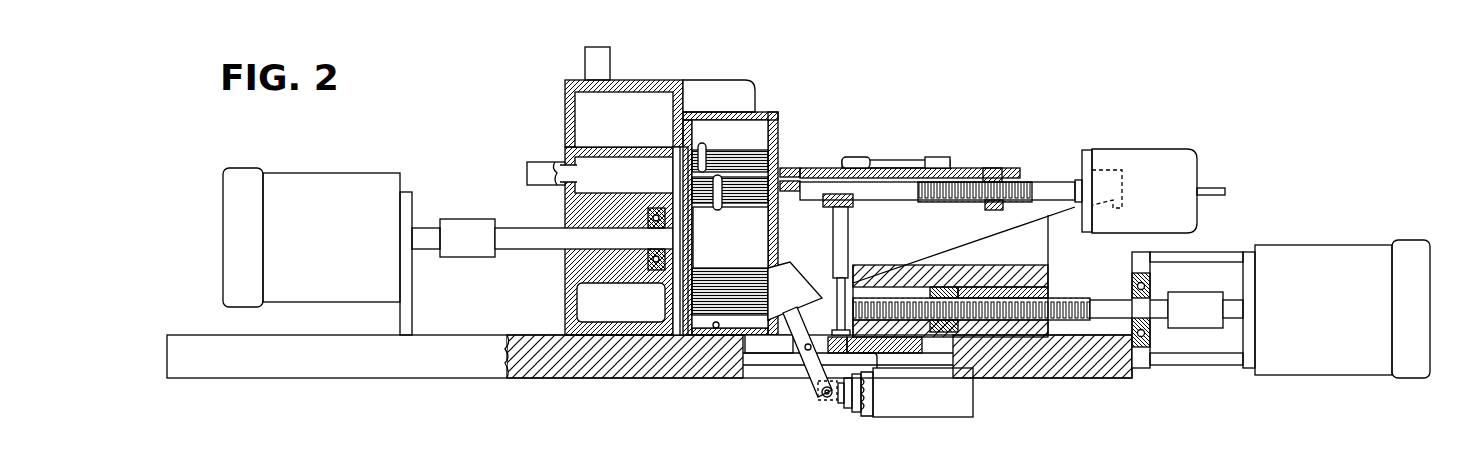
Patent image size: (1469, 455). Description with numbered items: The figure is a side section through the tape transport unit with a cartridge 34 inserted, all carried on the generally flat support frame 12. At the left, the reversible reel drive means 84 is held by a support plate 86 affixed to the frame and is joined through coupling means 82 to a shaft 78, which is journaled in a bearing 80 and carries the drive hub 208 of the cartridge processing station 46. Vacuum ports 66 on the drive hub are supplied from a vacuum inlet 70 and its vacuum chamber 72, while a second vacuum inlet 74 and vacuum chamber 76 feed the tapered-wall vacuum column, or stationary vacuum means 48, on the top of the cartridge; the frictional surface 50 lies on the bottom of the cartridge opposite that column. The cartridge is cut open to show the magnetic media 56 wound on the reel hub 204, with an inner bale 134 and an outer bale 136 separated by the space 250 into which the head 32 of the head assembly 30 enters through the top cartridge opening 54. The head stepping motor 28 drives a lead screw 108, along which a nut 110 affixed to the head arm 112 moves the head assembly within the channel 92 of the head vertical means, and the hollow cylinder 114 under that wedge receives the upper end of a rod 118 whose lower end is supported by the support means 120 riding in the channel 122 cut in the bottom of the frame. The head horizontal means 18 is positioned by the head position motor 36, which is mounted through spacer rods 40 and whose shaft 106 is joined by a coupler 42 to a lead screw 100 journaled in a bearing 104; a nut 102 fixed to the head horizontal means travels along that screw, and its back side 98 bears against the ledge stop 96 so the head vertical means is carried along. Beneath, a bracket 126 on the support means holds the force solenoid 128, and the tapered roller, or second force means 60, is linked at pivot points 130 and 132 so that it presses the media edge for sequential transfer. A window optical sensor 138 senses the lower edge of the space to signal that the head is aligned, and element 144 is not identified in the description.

The support frame 12 is at (203, 335).
The head horizontal means 18 is at (969, 281).
The head stepping motor 28 is at (1150, 176).
The head assembly 30 is at (963, 166).
The magnetic transducer (head) 32 is at (806, 172).
The cartridge 34 is at (731, 248).
The head position motor 36 is at (1304, 254).
The spacer rods 40 is at (1193, 311).
The coupler 42 is at (1190, 302).
The cartridge processing station 46 is at (626, 188).
The tapered-wall vacuum column (stationary vacuum means) 48 is at (722, 205).
The frictional surface 50 is at (717, 330).
The top cartridge opening 54 is at (779, 162).
The magnetic media 56 is at (705, 142).
The tapered roller (second force means) 60 is at (806, 306).
The vacuum ports 66 is at (673, 178).
The vacuum inlet 70 is at (537, 163).
The vacuum chamber 72 is at (617, 188).
The vacuum inlet 74 is at (606, 64).
The vacuum chamber 76 is at (612, 131).
The shaft 78 is at (526, 252).
The bearing 80 is at (636, 284).
The coupling means 82 is at (458, 220).
The reversible reel drive D.C. motor (reel drive means) 84 is at (300, 173).
The support plate 86 is at (405, 193).
The channel 92 is at (942, 170).
The ledge stop 96 is at (1123, 205).
The back side 98 is at (1049, 246).
The lead screw 100 is at (1078, 302).
The nut 102 is at (943, 287).
The bearing 104 is at (1172, 313).
The shaft 106 is at (1235, 302).
The lead screw 108 is at (1029, 182).
The nut 110 is at (996, 209).
The head arm 112 is at (994, 167).
The hollow cylinder 114 is at (848, 242).
The rod 118 is at (838, 290).
The support means 120 is at (896, 355).
The channel 122 is at (753, 346).
The bracket 126 is at (869, 412).
The force solenoid 128 is at (974, 407).
The pivot point 130 is at (809, 351).
The pivot point 132 is at (827, 400).
The inner bale 134 is at (721, 176).
The outer bale 136 is at (697, 143).
The window optical sensor 138 is at (824, 199).
The switch 144 is at (926, 160).
The reel hub 204 is at (742, 262).
The drive hub 208 is at (652, 337).
The space 250 is at (743, 205).